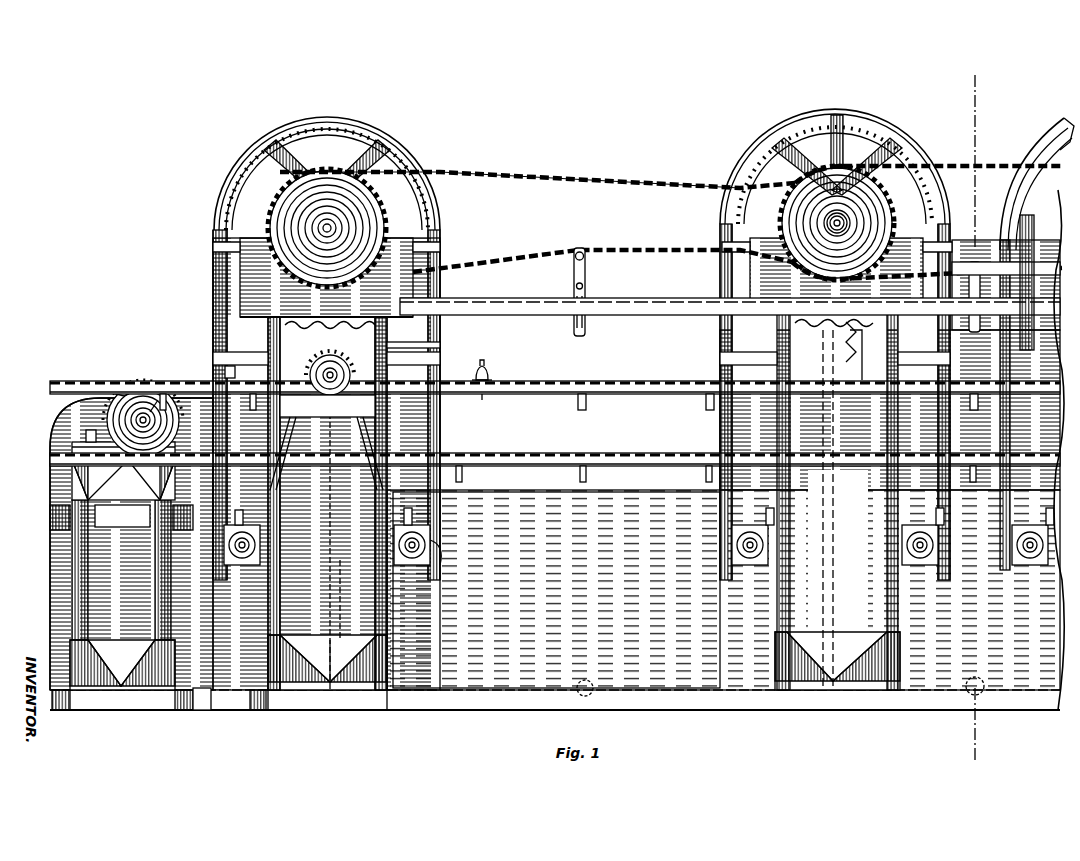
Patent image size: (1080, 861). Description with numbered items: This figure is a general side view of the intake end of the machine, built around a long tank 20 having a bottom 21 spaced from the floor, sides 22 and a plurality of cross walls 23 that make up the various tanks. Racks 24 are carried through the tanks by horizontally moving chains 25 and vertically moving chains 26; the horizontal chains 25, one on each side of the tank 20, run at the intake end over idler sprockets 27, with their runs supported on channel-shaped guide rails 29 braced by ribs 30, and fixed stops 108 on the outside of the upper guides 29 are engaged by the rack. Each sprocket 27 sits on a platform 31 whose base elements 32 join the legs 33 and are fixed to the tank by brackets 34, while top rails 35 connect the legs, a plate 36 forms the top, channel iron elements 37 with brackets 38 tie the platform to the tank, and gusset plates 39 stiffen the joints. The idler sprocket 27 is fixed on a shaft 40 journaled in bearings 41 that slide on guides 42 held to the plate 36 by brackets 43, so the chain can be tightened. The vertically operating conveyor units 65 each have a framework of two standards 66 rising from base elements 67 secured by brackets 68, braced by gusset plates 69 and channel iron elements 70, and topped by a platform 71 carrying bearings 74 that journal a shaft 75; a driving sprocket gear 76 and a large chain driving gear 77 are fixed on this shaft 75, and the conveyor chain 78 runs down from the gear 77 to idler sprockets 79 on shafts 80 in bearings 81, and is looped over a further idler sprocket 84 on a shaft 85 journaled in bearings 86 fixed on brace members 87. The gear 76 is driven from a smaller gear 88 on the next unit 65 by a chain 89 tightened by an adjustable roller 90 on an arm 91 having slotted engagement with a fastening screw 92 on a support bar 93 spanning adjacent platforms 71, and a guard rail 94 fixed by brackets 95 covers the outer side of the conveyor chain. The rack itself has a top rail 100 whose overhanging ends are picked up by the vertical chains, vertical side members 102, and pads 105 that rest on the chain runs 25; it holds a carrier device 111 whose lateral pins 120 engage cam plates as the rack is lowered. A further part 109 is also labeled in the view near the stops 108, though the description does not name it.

The tank 20 is at (500, 682).
The bottom 21 is at (545, 692).
The sides 22 is at (455, 665).
The cross walls 23 is at (830, 682).
The racks 24 is at (852, 150).
The horizontally moving chains 25 is at (540, 380).
The vertically moving chains 26 is at (264, 152).
The idler sprockets 27 is at (141, 414).
The guide rails 29 is at (612, 392).
The ribs 30 is at (708, 412).
The platforms 31 is at (70, 550).
The base elements 32 is at (140, 692).
The legs 33 is at (80, 620).
The brackets 34 is at (180, 695).
The top rails 35 is at (95, 462).
The plate 36 is at (72, 446).
The channel iron elements 37 is at (52, 530).
The brackets 38 is at (52, 510).
The gusset plates 39 is at (98, 692).
The shaft 40 is at (152, 420).
The bearings 41 is at (150, 412).
The guides 42 is at (124, 396).
The brackets 43 is at (88, 442).
The vertically operating conveyor units 65 is at (405, 142).
The standards 66 is at (262, 354).
The horizontal base elements 67 is at (300, 690).
The brackets 68 is at (258, 692).
The gusset plates 69 is at (280, 690).
The channel iron elements 70 is at (336, 600).
The platform 71 is at (582, 277).
The bearings 74 is at (350, 223).
The shaft 75 is at (328, 236).
The driving sprocket gear 76 is at (368, 190).
The conveying chain driving gear 77 is at (320, 132).
The conveyor chain 78 is at (286, 128).
The idler sprockets 79 is at (440, 540).
The shafts 80 is at (446, 560).
The bearings 81 is at (410, 522).
The idler sprocket 84 is at (335, 353).
The shaft 85 is at (348, 372).
The bearings 86 is at (322, 360).
The brace members 87 is at (378, 397).
The smaller gear 88 is at (790, 206).
The chain 89 is at (640, 180).
The adjustable roller 90 is at (577, 254).
The arm 91 is at (588, 288).
The fastening screw 92 is at (578, 310).
The support bar 93 is at (642, 308).
The guard rail 94 is at (436, 214).
The brackets 95 is at (438, 356).
The top rail 100 is at (500, 368).
The side members 102 is at (835, 162).
The pads 105 is at (484, 390).
The fixed stops 108 is at (639, 465).
The bracket 109 is at (228, 373).
The carrier device 111 is at (843, 338).
The pins 120 is at (856, 350).